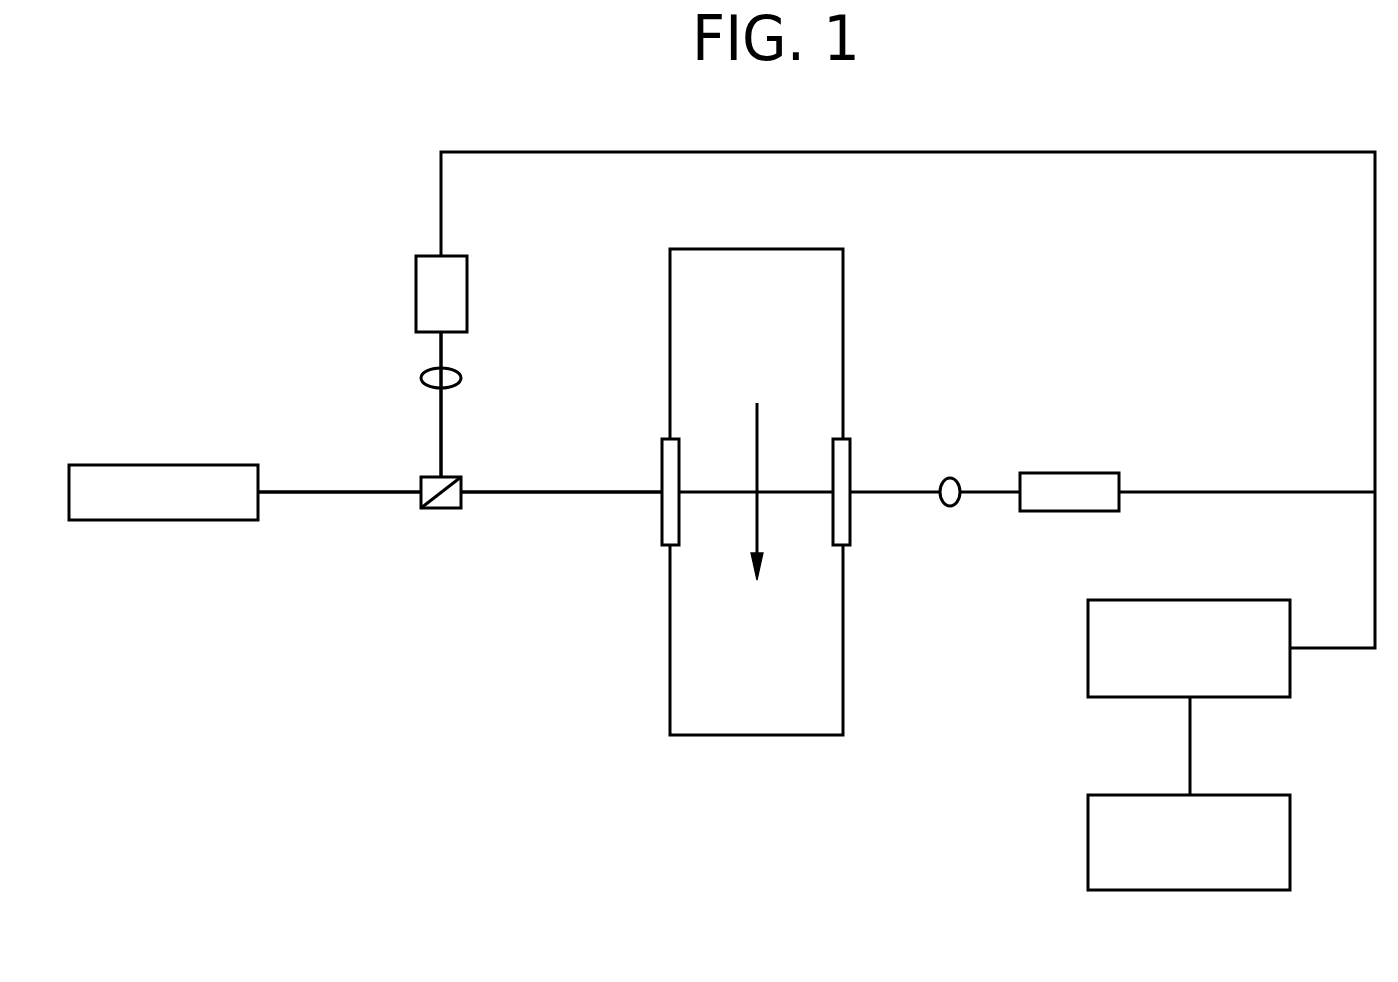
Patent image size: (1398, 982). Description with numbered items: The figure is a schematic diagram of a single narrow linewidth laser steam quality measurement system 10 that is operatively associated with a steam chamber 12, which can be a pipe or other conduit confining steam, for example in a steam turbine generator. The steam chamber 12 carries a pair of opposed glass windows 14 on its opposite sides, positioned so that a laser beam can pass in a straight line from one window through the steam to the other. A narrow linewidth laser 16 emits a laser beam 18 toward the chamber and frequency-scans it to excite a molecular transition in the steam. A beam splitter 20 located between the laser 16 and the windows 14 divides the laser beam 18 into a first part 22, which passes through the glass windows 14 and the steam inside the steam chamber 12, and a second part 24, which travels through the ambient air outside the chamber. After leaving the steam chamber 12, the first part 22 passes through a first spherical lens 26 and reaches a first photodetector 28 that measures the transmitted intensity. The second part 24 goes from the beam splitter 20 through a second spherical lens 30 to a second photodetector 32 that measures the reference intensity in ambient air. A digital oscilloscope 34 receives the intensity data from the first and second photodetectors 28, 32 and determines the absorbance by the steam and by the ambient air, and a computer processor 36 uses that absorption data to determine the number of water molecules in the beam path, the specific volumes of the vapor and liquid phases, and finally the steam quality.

The steam quality measurement system 10 is at (560, 659).
The steam chamber 12 is at (843, 343).
The glass windows 14 is at (660, 463).
The narrow linewidth laser 16 is at (165, 465).
The laser beam 18 is at (330, 490).
The beam splitter 20 is at (440, 510).
The first part 22 is at (548, 493).
The second part 24 is at (441, 427).
The first spherical lens 26 is at (948, 508).
The first photodetector 28 is at (1068, 473).
The second spherical lens 30 is at (418, 378).
The second photodetector 32 is at (467, 292).
The digital oscilloscope 34 is at (1088, 647).
The computer processor 36 is at (1088, 840).